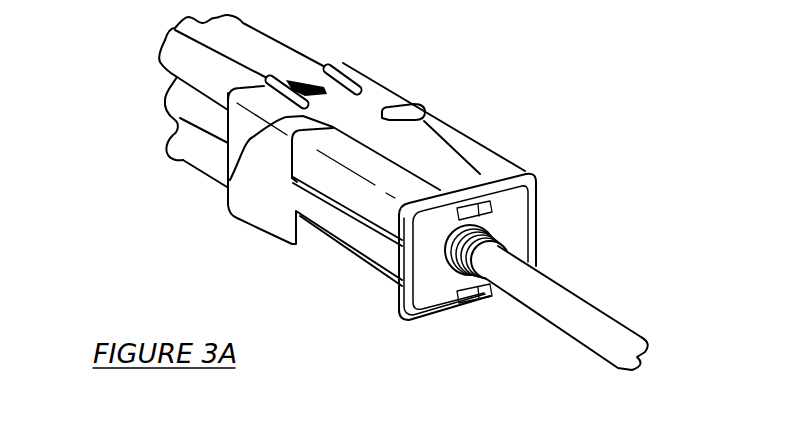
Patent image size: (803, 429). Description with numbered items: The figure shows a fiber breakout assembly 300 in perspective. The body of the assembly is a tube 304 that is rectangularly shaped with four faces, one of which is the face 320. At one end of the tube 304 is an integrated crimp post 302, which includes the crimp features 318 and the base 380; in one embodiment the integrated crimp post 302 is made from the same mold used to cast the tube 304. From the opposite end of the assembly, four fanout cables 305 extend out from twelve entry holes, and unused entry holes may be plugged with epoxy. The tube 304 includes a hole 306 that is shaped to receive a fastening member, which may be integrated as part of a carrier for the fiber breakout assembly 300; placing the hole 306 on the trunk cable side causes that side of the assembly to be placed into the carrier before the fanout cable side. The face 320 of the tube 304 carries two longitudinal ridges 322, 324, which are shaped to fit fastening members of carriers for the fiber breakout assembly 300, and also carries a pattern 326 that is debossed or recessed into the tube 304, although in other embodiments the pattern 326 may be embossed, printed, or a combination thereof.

The fiber breakout assembly 300 is at (373, 202).
The integrated crimp post 302 is at (552, 248).
The tube 304 is at (508, 160).
The fanout cables 305 is at (187, 163).
The hole 306 is at (482, 203).
The crimp features 318 is at (470, 284).
The face 320 is at (220, 198).
The longitudinal ridge 322 is at (325, 222).
The longitudinal ridge 324 is at (418, 136).
The pattern 326 is at (432, 158).
The base 380 is at (450, 250).